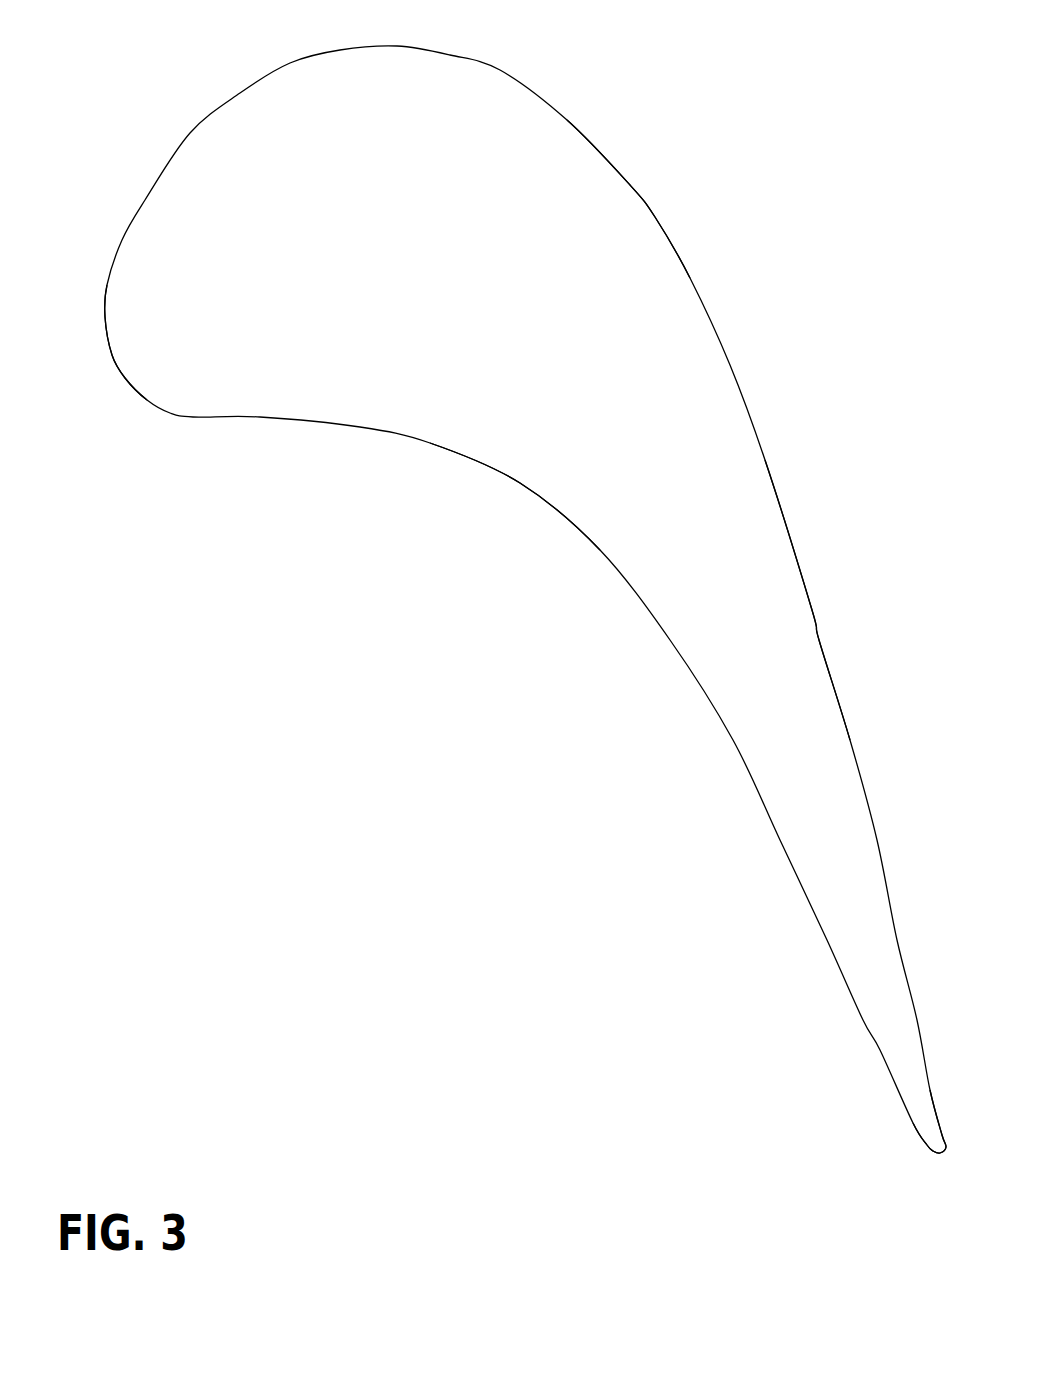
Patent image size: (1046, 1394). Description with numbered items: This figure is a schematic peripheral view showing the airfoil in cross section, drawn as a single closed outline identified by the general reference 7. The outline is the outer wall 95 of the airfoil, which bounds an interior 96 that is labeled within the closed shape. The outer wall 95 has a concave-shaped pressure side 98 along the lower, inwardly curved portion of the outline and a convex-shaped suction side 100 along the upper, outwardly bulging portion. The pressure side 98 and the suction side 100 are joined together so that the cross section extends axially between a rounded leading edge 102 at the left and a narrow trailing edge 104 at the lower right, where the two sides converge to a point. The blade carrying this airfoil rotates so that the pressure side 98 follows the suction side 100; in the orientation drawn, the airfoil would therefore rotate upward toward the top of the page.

The airfoil 7 is at (178, 115).
The outer wall 95 is at (812, 610).
The interior 96 is at (427, 258).
The pressure side 98 is at (522, 485).
The suction side 100 is at (655, 217).
The leading edge 102 is at (113, 370).
The trailing edge 104 is at (936, 1154).